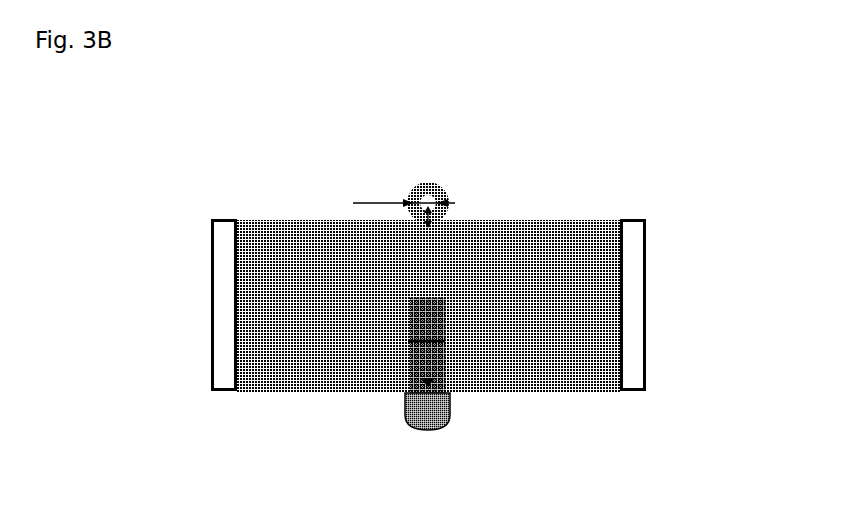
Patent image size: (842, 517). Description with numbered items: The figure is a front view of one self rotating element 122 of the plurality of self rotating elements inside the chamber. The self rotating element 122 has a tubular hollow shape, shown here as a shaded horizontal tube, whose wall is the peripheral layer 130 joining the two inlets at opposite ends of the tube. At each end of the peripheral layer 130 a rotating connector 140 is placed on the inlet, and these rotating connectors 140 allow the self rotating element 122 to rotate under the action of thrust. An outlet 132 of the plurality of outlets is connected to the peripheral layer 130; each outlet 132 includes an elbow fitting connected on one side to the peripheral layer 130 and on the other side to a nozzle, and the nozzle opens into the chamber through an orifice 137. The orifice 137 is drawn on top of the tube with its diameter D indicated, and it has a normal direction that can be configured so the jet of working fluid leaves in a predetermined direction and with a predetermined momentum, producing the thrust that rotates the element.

The self rotating element 122 is at (607, 113).
The peripheral layer 130 is at (259, 220).
The outlet 132 is at (452, 190).
The orifice 137 is at (432, 198).
The rotating connector 140 is at (638, 219).